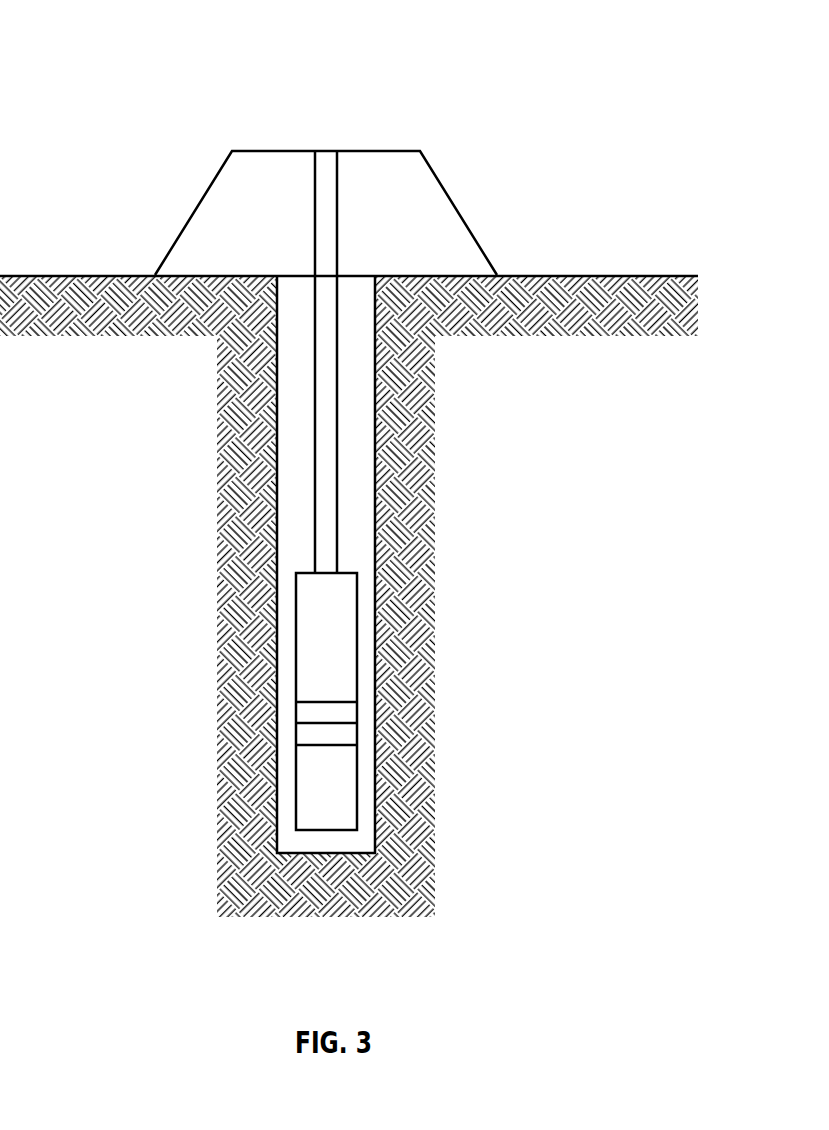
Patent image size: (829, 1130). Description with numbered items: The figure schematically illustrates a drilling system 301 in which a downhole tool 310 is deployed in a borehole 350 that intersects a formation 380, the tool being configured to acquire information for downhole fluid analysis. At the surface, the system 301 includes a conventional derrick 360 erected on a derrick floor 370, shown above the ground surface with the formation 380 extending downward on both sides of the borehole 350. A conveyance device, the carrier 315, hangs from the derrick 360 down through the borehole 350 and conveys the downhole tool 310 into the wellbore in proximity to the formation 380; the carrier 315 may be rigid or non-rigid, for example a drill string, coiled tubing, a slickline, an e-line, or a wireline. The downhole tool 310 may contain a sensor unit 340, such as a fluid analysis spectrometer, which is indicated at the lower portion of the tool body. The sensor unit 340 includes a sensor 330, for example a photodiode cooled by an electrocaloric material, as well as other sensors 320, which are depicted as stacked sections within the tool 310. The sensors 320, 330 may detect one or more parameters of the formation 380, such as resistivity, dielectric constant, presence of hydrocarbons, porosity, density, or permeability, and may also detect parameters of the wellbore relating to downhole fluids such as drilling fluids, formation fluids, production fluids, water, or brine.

The drilling system 301 is at (133, 48).
The downhole tool 310 is at (296, 666).
The carrier 315 is at (337, 427).
The sensors 320 is at (358, 735).
The sensor 330 is at (358, 705).
The sensor unit 340 is at (283, 720).
The borehole 350 is at (276, 477).
The derrick 360 is at (442, 187).
The derrick floor 370 is at (377, 242).
The formation 380 is at (489, 443).